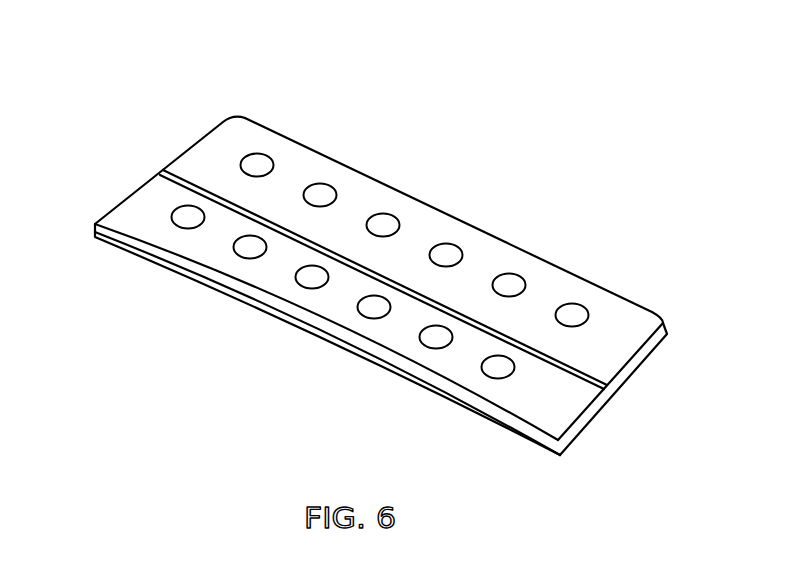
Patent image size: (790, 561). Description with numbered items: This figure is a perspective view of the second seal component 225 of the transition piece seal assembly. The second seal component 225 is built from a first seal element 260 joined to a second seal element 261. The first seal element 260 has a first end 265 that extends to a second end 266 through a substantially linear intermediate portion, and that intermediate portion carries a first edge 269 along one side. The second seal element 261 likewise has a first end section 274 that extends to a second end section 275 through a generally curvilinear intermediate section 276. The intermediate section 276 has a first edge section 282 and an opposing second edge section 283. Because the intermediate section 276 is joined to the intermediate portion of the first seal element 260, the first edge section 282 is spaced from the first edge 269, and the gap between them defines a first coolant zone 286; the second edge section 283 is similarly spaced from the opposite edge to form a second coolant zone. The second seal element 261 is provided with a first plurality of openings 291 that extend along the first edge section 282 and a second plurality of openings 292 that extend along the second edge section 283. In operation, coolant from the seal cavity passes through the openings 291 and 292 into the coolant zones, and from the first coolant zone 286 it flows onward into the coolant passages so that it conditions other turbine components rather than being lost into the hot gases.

The second seal component 225 is at (264, 95).
The first seal element 260 is at (319, 353).
The second seal element 261 is at (244, 203).
The first end 265 is at (647, 357).
The second end 266 is at (208, 130).
The first edge 269 is at (216, 293).
The first end section 274 is at (570, 408).
The second end section 275 is at (158, 185).
The intermediate section 276 is at (340, 228).
The first edge section 282 is at (293, 307).
The second edge section 283 is at (430, 198).
The first coolant zone 286 is at (150, 250).
The first plurality of openings 291 is at (454, 354).
The second plurality of openings 292 is at (534, 276).